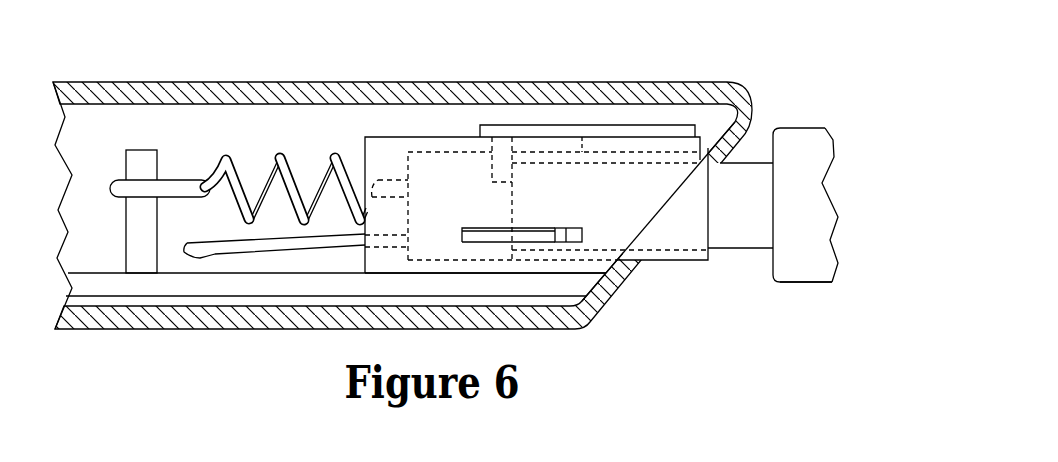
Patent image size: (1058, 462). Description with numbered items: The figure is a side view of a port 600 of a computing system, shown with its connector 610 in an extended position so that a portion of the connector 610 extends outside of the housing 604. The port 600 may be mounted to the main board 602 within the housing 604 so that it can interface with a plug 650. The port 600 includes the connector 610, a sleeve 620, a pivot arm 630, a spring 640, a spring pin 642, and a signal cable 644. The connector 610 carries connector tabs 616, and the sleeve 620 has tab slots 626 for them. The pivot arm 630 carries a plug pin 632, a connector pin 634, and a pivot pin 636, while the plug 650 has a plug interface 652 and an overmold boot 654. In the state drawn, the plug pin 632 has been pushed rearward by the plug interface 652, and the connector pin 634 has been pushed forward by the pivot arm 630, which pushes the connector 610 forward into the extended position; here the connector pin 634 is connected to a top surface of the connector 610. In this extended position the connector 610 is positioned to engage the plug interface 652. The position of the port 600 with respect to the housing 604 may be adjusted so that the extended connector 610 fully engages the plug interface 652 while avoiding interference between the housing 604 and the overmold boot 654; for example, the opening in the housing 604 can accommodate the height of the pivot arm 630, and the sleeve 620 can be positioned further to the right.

The port 600 is at (629, 321).
The main board 602 is at (102, 272).
The housing 604 is at (693, 81).
The connector 610 is at (663, 261).
The connector tabs 616 is at (564, 228).
The sleeve 620 is at (387, 136).
The tab slots 626 is at (498, 228).
The pivot arm 630 is at (584, 125).
The plug pin 632 is at (488, 176).
The connector pin 634 is at (645, 152).
The pivot pin 636 is at (574, 156).
The spring 640 is at (252, 163).
The spring pin 642 is at (158, 168).
The signal cable 644 is at (246, 233).
The plug 650 is at (793, 108).
The plug interface 652 is at (736, 249).
The overmold boot 654 is at (804, 284).